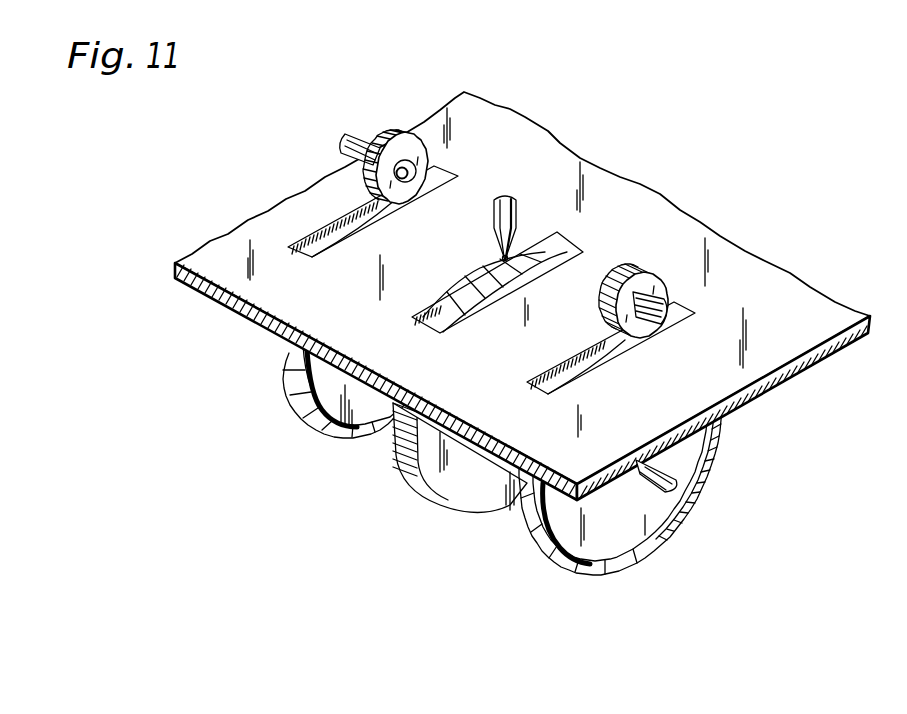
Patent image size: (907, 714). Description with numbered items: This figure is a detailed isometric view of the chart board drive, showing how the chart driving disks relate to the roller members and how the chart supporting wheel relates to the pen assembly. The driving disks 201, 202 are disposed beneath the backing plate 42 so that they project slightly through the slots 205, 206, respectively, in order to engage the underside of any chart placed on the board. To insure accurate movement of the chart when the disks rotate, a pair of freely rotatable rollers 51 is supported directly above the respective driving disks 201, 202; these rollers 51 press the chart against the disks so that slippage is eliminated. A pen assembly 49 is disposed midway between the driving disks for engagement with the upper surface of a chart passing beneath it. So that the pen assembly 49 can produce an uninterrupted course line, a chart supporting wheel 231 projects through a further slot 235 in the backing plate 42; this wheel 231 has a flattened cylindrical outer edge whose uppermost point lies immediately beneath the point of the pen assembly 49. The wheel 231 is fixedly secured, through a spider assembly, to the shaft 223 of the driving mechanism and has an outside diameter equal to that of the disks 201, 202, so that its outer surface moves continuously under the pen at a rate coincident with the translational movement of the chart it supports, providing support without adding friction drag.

The backing plate 42 is at (818, 315).
The pen assembly 49 is at (496, 216).
The rollers 51 is at (416, 136).
The driving disk 201 is at (320, 422).
The driving disk 202 is at (567, 567).
The slot 205 is at (310, 258).
The slot 206 is at (537, 395).
The shaft 223 is at (657, 495).
The chart supporting wheel 231 is at (462, 500).
The slot 235 is at (423, 317).